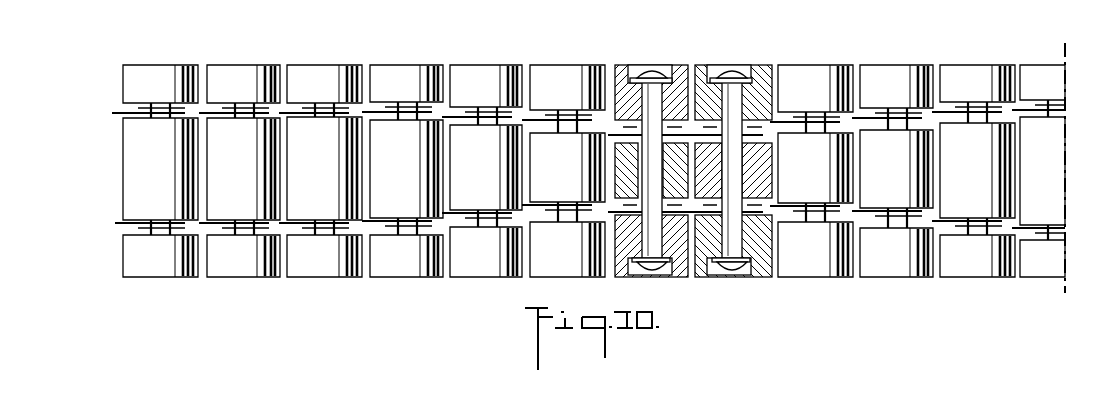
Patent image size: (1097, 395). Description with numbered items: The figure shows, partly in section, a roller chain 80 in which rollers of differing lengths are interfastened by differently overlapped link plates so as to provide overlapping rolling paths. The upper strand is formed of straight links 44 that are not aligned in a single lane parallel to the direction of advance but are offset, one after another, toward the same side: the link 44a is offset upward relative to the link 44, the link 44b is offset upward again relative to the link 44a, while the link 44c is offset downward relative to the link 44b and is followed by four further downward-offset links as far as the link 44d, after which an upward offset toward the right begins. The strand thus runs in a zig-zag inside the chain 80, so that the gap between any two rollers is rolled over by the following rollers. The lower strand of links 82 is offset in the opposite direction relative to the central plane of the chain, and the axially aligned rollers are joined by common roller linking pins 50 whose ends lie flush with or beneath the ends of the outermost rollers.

The straight link 44 is at (108, 98).
The link 44a is at (202, 110).
The link 44b is at (299, 98).
The link 44c is at (381, 102).
The link 44d is at (690, 64).
The roller linking pin 50 is at (743, 98).
The chain 80 is at (494, 61).
The lower strand of links 82 is at (474, 286).